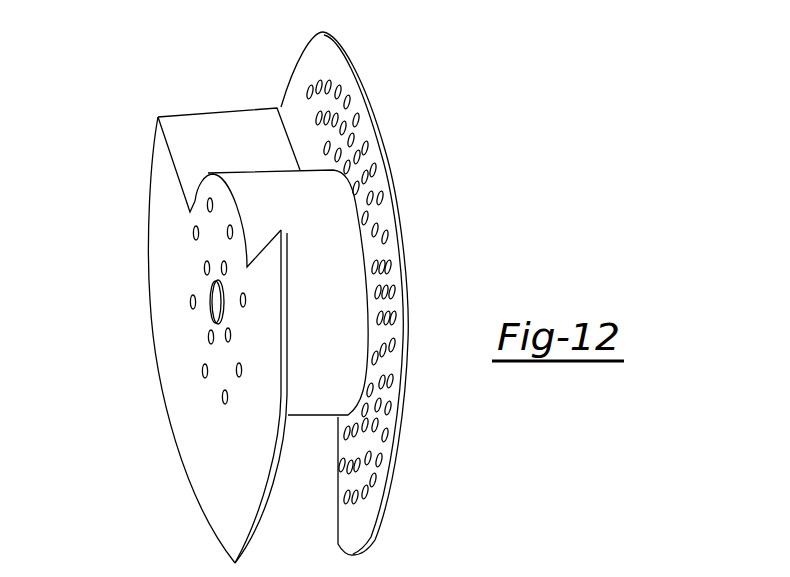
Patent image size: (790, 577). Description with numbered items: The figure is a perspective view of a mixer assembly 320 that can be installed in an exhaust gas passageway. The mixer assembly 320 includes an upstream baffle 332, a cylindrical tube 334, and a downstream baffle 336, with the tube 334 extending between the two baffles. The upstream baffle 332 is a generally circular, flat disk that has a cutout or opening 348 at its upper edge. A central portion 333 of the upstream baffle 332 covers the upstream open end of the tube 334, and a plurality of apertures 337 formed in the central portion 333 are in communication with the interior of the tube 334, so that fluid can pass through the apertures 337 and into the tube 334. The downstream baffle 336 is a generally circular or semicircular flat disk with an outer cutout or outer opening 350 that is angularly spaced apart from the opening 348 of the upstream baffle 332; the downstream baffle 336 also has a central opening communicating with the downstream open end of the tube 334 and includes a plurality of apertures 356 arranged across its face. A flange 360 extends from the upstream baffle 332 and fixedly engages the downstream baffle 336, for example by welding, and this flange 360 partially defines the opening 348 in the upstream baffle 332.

The mixer assembly 320 is at (416, 73).
The upstream baffle 332 is at (204, 507).
The central portion 333 is at (212, 220).
The cylindrical tube 334 is at (337, 268).
The downstream baffle 336 is at (400, 207).
The apertures 337 is at (211, 336).
The opening 348 is at (200, 158).
The outer opening 350 is at (323, 503).
The apertures 356 is at (398, 400).
The flange 360 is at (242, 133).